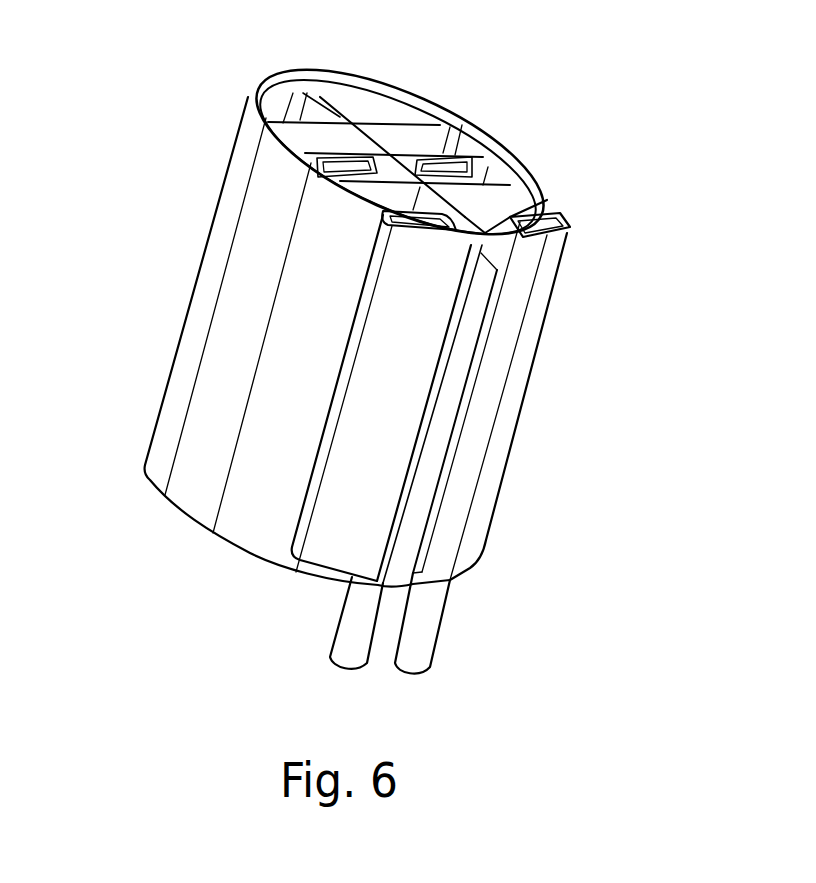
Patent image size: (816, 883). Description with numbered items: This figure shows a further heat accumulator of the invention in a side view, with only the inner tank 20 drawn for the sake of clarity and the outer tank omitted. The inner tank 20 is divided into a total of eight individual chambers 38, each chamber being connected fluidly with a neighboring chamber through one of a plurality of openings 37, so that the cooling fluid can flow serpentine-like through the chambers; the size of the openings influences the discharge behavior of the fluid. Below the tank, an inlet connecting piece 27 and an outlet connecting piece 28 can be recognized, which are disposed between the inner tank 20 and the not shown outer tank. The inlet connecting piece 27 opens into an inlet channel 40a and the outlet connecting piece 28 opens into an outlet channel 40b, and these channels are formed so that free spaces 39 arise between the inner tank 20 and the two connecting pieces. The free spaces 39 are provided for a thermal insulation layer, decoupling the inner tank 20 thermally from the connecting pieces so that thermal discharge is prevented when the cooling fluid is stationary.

The inner tank 20 is at (193, 502).
The inlet connecting piece 27 is at (347, 633).
The outlet connecting piece 28 is at (425, 635).
The openings 37 is at (343, 92).
The chambers 38 is at (497, 193).
The free spaces 39 is at (547, 208).
The inlet channel 40a is at (325, 543).
The outlet channel 40b is at (527, 364).